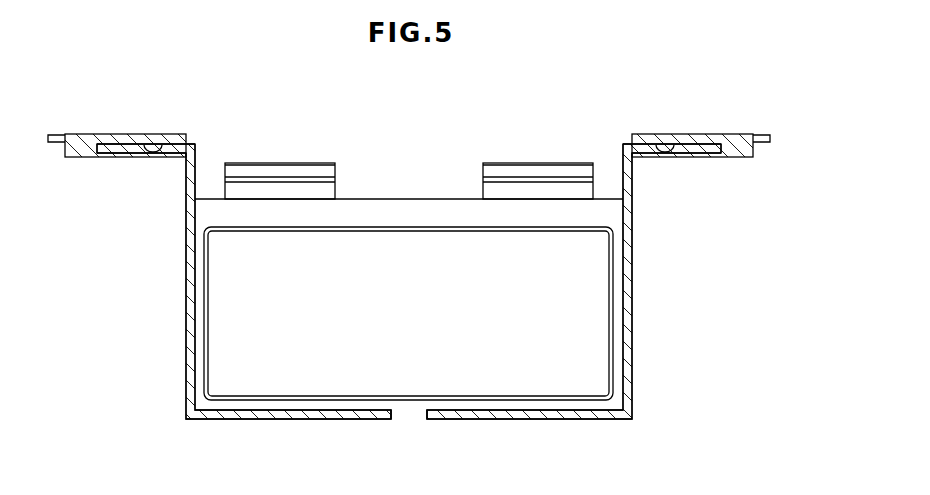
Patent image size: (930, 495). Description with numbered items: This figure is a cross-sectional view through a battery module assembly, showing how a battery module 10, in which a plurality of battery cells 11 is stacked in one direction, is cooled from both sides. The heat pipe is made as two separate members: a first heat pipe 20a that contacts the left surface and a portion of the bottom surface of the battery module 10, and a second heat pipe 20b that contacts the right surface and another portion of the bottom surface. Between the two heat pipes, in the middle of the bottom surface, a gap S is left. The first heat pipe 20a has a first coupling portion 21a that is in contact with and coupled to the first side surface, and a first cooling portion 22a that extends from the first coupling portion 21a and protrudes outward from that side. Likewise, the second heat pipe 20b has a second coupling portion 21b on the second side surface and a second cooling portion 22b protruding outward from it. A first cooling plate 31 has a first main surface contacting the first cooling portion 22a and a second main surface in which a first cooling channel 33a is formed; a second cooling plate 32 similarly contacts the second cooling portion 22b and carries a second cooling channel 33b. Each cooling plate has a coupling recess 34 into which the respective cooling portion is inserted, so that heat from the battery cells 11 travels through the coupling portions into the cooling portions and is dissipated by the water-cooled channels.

The battery module 10 is at (402, 193).
The battery cell 11 is at (372, 218).
The first heat pipe 20a is at (231, 281).
The second heat pipe 20b is at (584, 281).
The first coupling portion 21a is at (188, 258).
The second coupling portion 21b is at (628, 258).
The first cooling portion 22a is at (141, 153).
The second cooling portion 22b is at (676, 153).
The first cooling plate 31 is at (119, 128).
The second cooling plate 32 is at (700, 126).
The first cooling channel 33a is at (52, 134).
The second cooling channel 33b is at (768, 134).
The coupling recess 34 is at (150, 145).
The gap S is at (408, 420).